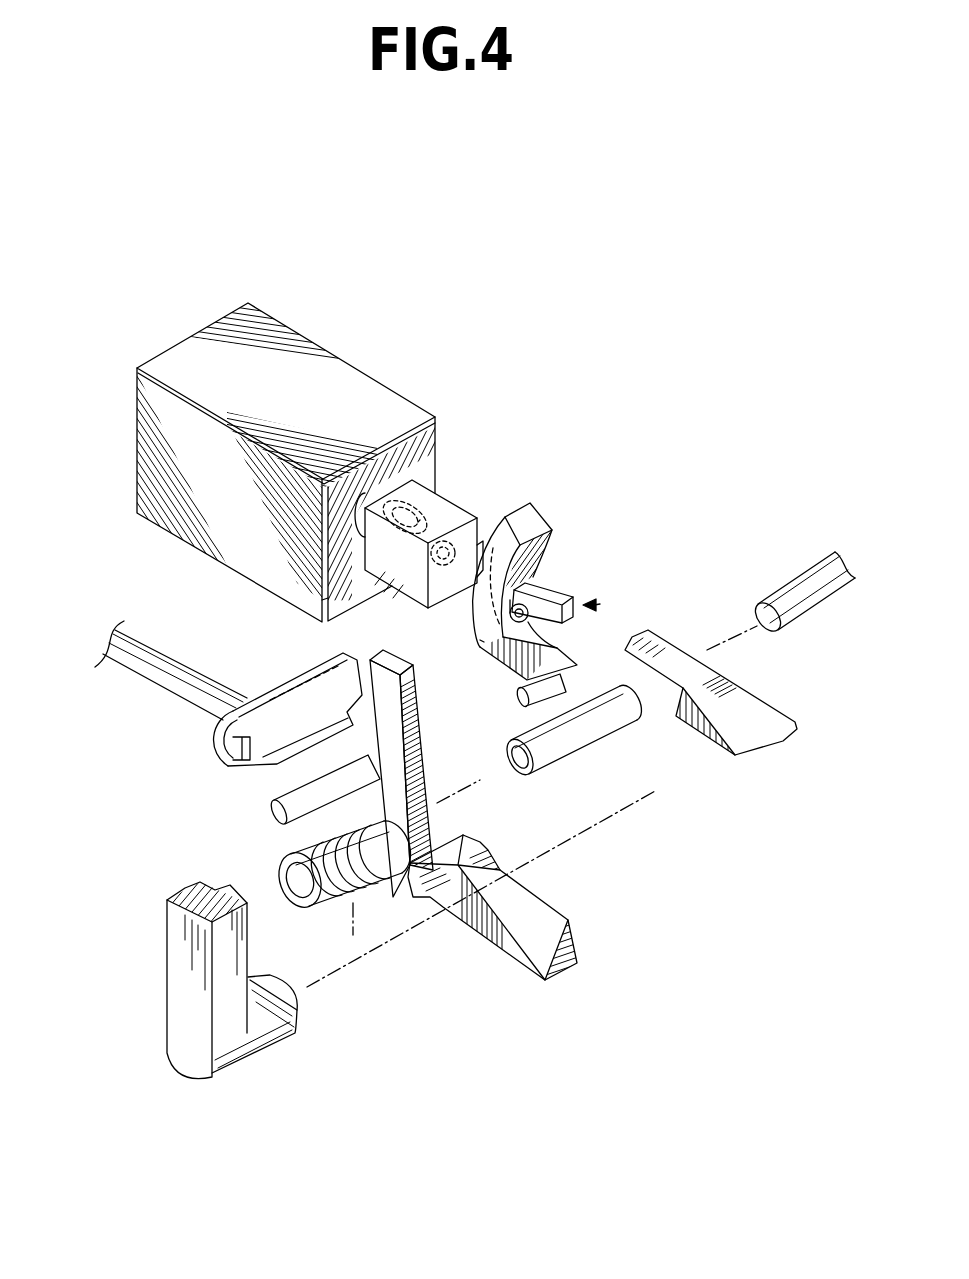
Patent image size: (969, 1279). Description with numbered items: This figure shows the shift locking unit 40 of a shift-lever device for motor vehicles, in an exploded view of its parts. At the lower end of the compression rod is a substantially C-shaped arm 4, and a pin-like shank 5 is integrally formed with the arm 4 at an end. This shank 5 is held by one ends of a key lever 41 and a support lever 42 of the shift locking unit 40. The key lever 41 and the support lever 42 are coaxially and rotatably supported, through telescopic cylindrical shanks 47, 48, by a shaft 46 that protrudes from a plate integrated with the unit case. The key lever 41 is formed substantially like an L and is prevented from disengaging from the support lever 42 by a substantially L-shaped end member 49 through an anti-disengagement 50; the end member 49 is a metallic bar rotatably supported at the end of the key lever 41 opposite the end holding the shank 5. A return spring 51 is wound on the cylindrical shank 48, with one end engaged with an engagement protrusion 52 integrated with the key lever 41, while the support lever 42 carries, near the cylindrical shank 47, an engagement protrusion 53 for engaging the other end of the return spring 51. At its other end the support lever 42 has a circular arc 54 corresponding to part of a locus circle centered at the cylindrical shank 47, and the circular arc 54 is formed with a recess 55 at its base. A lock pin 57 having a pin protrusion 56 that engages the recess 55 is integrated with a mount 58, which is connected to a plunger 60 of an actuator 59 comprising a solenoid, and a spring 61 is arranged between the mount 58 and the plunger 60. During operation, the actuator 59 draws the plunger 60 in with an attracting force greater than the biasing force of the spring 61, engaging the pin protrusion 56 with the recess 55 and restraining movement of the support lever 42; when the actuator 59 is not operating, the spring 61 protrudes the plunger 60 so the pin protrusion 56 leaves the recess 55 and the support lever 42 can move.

The shift locking unit 40 is at (636, 368).
The actuator 59 is at (342, 375).
The plunger 60 is at (312, 606).
The mount 58 is at (450, 512).
The spring 61 is at (413, 520).
The circular arc 54 is at (518, 513).
The recess 55 is at (482, 625).
The pin protrusion 56 is at (540, 578).
The lock pin 57 is at (598, 604).
The shaft 46 is at (795, 598).
The support lever 42 is at (757, 702).
The cylindrical shank 47 is at (590, 730).
The engagement protrusion 53 is at (542, 693).
The end member 49 is at (153, 682).
The anti-disengagement 50 is at (222, 751).
The engagement protrusion 52 is at (390, 723).
The return spring 51 is at (403, 800).
The cylindrical shank 48 is at (300, 905).
The key lever 41 is at (515, 943).
The arm 4 is at (180, 967).
The shank 5 is at (272, 1022).